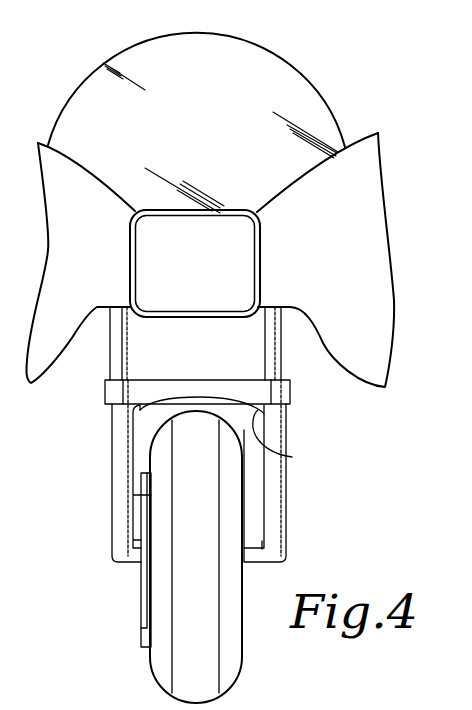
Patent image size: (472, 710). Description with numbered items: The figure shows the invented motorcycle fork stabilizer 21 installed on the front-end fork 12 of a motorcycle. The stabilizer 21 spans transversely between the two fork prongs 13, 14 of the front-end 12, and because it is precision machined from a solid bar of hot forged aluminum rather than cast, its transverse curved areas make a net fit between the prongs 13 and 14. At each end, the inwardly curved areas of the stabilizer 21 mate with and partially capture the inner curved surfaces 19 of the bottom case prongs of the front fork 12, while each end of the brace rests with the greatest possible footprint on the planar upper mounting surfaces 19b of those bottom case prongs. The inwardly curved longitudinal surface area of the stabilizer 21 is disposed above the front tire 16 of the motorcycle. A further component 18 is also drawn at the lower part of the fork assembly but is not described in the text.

The front fork 12 is at (102, 363).
The fork prong 13 is at (127, 342).
The fork prong 14 is at (281, 352).
The front tire 16 is at (242, 667).
The brake caliper 18 is at (140, 647).
The inner curved surfaces 19 is at (104, 399).
The planar upper mounting surfaces 19b is at (292, 457).
The motorcycle fork stabilizer 21 is at (199, 388).